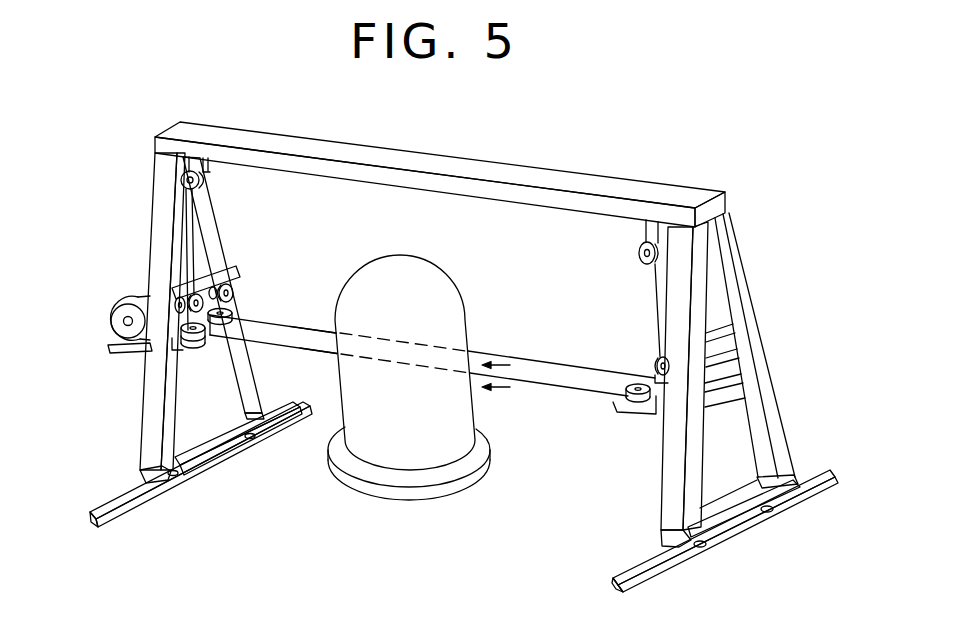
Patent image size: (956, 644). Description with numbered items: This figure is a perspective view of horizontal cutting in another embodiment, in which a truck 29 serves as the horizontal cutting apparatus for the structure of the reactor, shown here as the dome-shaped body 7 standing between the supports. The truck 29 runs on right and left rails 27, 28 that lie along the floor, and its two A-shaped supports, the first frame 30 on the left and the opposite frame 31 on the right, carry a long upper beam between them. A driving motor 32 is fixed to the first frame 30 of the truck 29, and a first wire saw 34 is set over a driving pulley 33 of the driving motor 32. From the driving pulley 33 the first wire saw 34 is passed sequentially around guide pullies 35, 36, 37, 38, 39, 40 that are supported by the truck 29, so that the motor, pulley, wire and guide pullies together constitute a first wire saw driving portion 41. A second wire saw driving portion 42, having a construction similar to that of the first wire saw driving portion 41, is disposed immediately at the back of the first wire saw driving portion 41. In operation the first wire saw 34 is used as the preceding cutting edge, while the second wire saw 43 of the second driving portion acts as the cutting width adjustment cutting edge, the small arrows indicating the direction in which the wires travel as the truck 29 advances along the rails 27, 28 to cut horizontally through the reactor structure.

The dome-shaped object 7 is at (479, 299).
The rail 27 is at (110, 500).
The rail 28 is at (651, 566).
The truck 29 is at (664, 172).
The first frame 30 is at (136, 373).
The right A-frame support 31 is at (769, 327).
The driving motor 32 is at (109, 305).
The driving pulley 33 is at (125, 333).
The first wire saw 34 is at (530, 386).
The guide pulley 35 is at (190, 344).
The guide pulley 36 is at (630, 409).
The guide pulley 37 is at (657, 355).
The guide pulley 38 is at (640, 263).
The guide pulley 39 is at (186, 178).
The guide pulley 40 is at (174, 292).
The first wire saw driving portion 41 is at (326, 362).
The second wire saw driving portion 42 is at (304, 321).
The second wire saw 43 is at (532, 362).